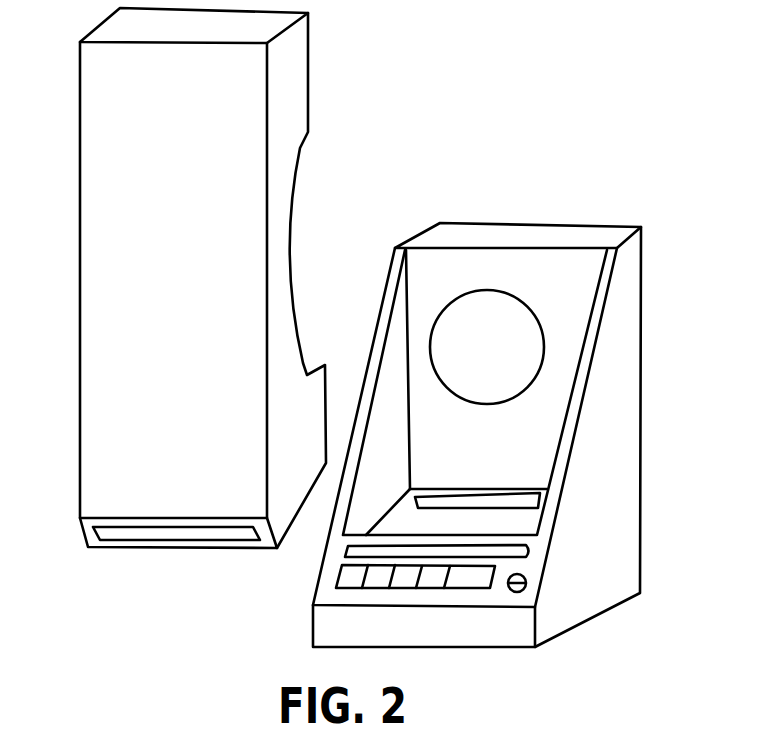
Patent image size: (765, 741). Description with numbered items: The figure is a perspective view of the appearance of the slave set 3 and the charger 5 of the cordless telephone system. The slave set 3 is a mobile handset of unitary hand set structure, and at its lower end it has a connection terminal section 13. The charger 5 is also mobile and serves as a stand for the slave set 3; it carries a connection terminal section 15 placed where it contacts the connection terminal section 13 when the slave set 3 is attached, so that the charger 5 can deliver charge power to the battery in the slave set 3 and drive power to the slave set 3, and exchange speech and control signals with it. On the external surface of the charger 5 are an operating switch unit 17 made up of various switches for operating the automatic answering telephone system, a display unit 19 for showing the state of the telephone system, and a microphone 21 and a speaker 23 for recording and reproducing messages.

The slave set 3 is at (103, 34).
The connection terminal section 13 is at (225, 535).
The charger 5 is at (452, 232).
The speaker 23 is at (498, 303).
The connection terminal section 15 is at (471, 500).
The display unit 19 is at (530, 551).
The operating switch unit 17 is at (479, 585).
The microphone 21 is at (527, 583).